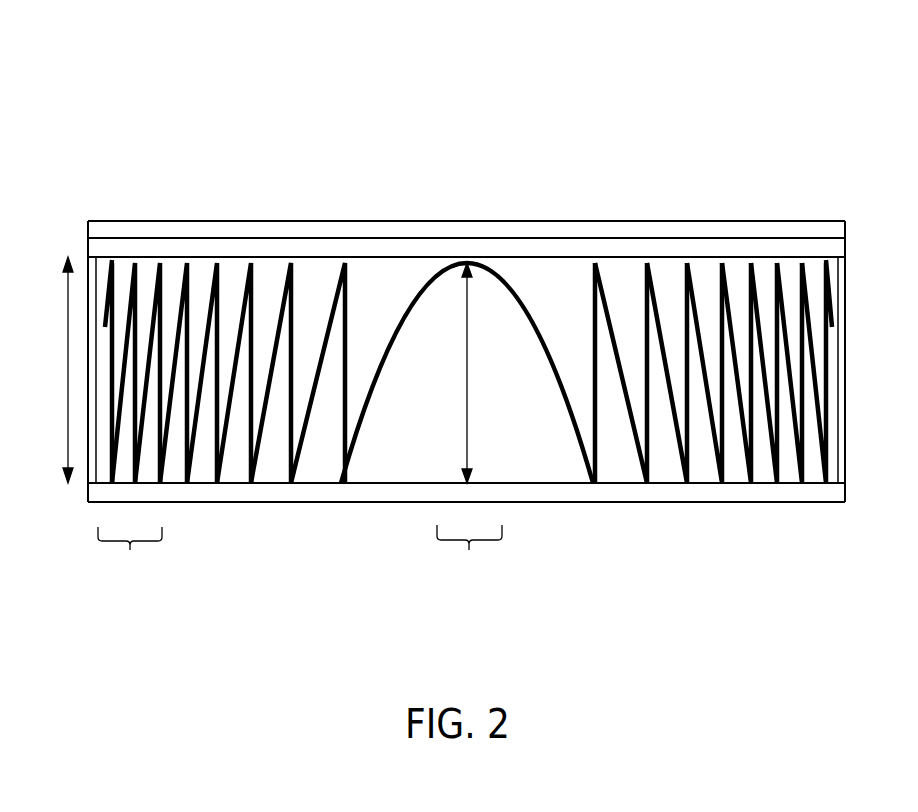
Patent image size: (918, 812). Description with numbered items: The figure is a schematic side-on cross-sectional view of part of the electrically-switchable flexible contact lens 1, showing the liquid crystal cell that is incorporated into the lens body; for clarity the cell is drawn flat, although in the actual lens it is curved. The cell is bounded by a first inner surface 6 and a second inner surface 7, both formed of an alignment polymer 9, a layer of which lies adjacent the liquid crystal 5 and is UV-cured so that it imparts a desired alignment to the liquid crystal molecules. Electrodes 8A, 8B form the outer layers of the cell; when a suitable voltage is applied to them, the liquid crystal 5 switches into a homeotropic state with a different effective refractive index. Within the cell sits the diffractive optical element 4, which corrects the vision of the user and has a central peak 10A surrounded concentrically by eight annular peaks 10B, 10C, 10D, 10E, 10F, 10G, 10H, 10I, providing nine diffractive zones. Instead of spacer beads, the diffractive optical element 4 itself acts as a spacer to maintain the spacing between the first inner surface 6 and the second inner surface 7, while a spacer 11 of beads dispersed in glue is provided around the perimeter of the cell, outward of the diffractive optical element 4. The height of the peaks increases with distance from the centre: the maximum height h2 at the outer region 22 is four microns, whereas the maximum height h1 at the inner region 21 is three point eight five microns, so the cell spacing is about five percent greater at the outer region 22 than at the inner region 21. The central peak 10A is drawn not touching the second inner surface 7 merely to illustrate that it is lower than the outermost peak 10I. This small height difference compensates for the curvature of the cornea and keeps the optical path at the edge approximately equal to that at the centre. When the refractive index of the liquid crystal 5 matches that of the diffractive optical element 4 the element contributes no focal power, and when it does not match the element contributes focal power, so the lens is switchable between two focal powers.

The contact lens 1 is at (277, 118).
The diffractive optical element 4 is at (375, 450).
The liquid crystal 5 is at (371, 272).
The first inner surface 6 is at (400, 484).
The second inner surface 7 is at (515, 257).
The electrode 8A is at (698, 492).
The electrode 8B is at (423, 228).
The alignment polymer 9 is at (553, 250).
The central peak 10A is at (464, 262).
The annular peak 10B is at (340, 262).
The annular peak 10C is at (645, 264).
The annular peak 10D is at (248, 262).
The annular peak 10E is at (720, 264).
The annular peak 10F is at (187, 262).
The annular peak 10G is at (777, 262).
The annular peak 10H is at (137, 262).
The annular peak 10I is at (825, 262).
The spacer 11 is at (845, 372).
The inner region 21 is at (469, 560).
The outer region 22 is at (130, 566).
The maximum height at inner portion h1 is at (487, 373).
The maximum height at outer portion h2 is at (48, 370).